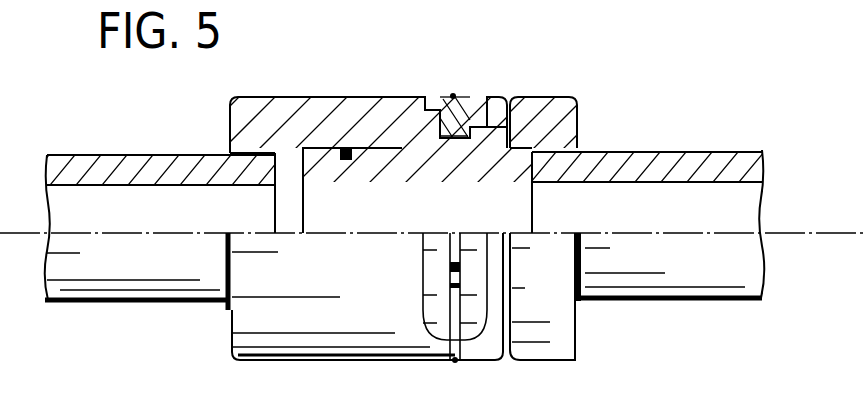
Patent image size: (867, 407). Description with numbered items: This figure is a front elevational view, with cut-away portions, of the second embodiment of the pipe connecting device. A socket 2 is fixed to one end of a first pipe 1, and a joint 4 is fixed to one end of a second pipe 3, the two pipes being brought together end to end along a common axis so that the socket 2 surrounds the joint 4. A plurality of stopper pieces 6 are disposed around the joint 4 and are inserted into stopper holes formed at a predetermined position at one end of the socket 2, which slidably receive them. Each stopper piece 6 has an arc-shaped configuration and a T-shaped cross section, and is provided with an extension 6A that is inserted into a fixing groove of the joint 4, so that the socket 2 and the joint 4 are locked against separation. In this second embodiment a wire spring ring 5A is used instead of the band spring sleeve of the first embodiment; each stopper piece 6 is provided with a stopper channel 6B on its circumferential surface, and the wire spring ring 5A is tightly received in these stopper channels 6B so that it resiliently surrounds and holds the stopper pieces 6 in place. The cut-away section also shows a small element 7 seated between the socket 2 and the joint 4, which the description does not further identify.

The first pipe 1 is at (117, 166).
The socket 2 is at (253, 127).
The second pipe 3 is at (672, 157).
The joint 4 is at (557, 108).
The wire spring ring 5A is at (452, 97).
The stopper piece 6 is at (433, 110).
The extension 6A is at (461, 125).
The stopper channel 6B is at (452, 94).
The seal ring 7 is at (342, 150).